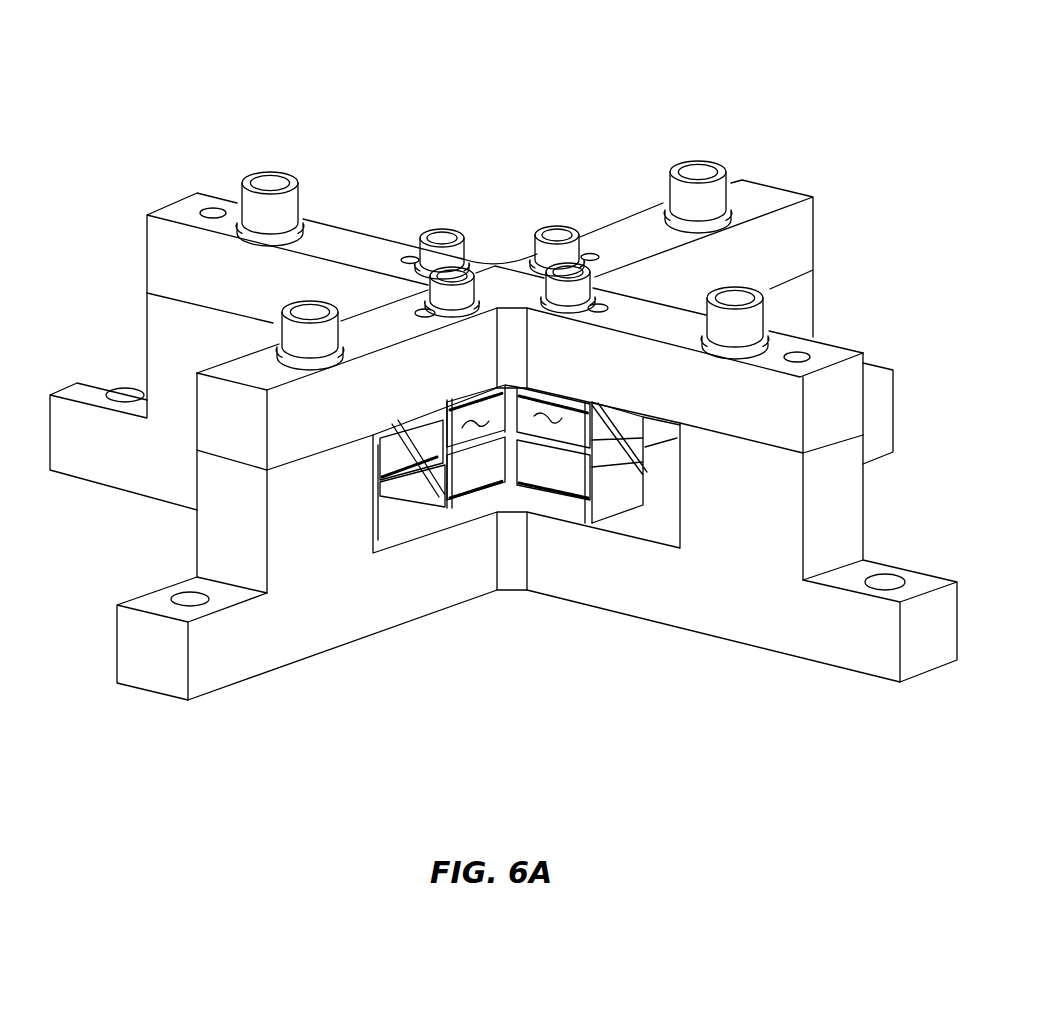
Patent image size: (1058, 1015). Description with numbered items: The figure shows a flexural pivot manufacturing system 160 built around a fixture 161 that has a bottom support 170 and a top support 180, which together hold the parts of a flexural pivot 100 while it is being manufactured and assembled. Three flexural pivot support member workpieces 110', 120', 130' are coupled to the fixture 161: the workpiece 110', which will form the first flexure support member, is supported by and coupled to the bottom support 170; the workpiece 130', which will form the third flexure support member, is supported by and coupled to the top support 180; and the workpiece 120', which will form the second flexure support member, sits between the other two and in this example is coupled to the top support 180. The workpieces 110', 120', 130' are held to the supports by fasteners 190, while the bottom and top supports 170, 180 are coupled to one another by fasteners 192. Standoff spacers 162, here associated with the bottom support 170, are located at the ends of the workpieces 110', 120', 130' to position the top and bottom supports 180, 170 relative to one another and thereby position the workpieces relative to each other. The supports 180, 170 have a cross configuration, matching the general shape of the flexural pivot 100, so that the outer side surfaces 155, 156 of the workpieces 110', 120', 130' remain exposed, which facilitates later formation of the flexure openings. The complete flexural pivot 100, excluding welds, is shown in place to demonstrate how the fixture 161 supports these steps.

The flexural pivot manufacturing system 160 is at (448, 50).
The fixture 161 is at (670, 135).
The bottom support 170 is at (128, 306).
The top support 180 is at (163, 183).
The standoff spacers 162 is at (147, 332).
The fasteners 190 is at (441, 230).
The fasteners 192 is at (770, 312).
The flexural pivot 100 is at (418, 521).
The flexural pivot support member workpiece 130' is at (518, 327).
The flexural pivot support member workpiece 120' is at (476, 551).
The flexural pivot support member workpiece 110' is at (553, 542).
The outer side surface 155 is at (549, 422).
The outer side surface 156 is at (477, 428).